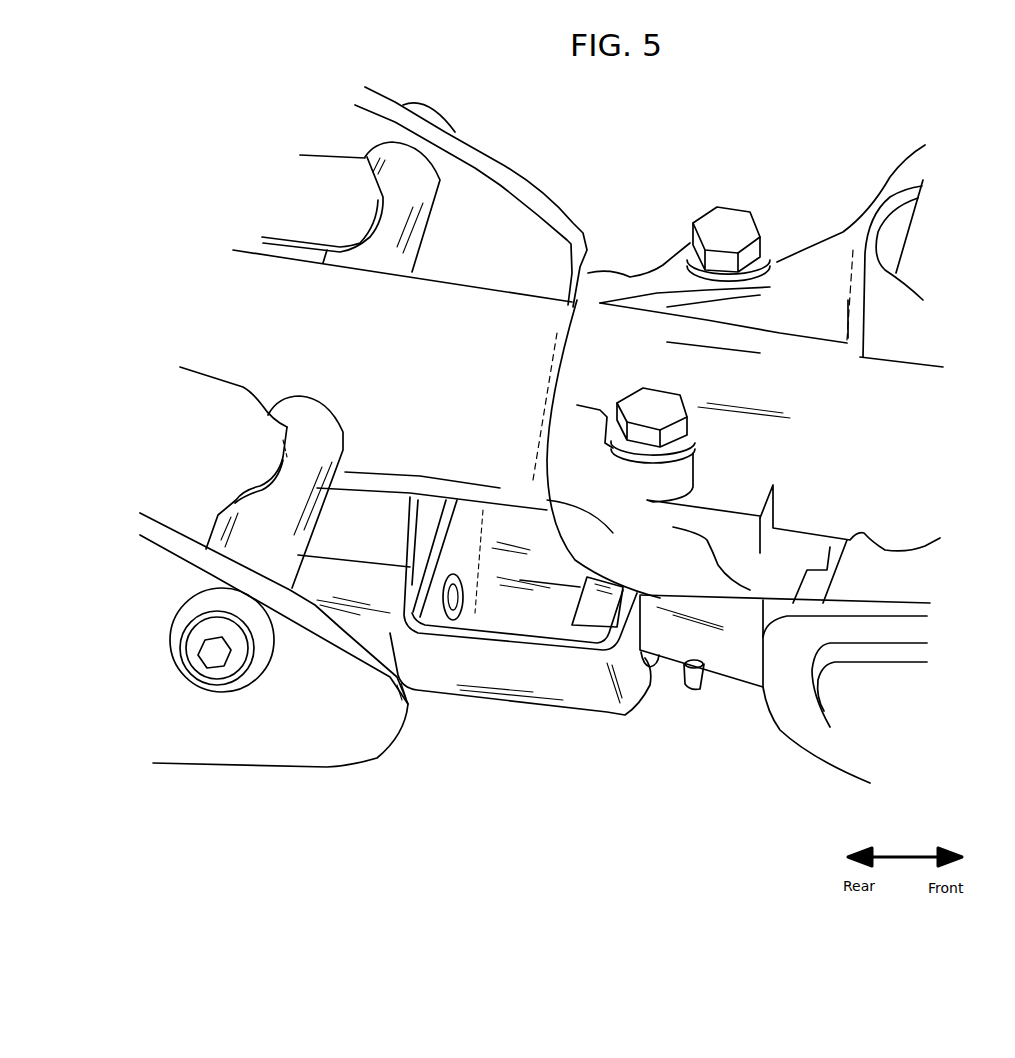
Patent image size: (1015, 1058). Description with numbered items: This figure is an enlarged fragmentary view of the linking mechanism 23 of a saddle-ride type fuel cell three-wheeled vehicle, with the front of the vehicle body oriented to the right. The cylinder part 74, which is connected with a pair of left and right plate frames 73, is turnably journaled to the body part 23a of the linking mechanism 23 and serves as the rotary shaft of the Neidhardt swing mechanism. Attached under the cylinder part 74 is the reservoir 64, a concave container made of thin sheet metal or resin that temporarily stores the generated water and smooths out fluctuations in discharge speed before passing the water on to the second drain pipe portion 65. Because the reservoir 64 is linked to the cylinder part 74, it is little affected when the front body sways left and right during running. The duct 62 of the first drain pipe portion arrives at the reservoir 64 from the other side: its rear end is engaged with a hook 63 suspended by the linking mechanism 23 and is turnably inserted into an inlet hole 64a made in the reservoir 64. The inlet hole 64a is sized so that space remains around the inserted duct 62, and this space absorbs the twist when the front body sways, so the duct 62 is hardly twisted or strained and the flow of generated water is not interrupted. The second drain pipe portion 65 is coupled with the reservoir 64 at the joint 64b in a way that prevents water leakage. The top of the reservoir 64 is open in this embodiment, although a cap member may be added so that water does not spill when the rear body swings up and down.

The linking mechanism 23 is at (822, 240).
The body part 23a is at (640, 340).
The duct 62 is at (743, 672).
The hook 63 is at (699, 695).
The reservoir 64 is at (580, 703).
The inlet hole 64a is at (660, 670).
The joint 64b is at (470, 586).
The second drain pipe portion 65 is at (377, 600).
The plate frames 73 is at (500, 162).
The cylinder part 74 is at (492, 305).